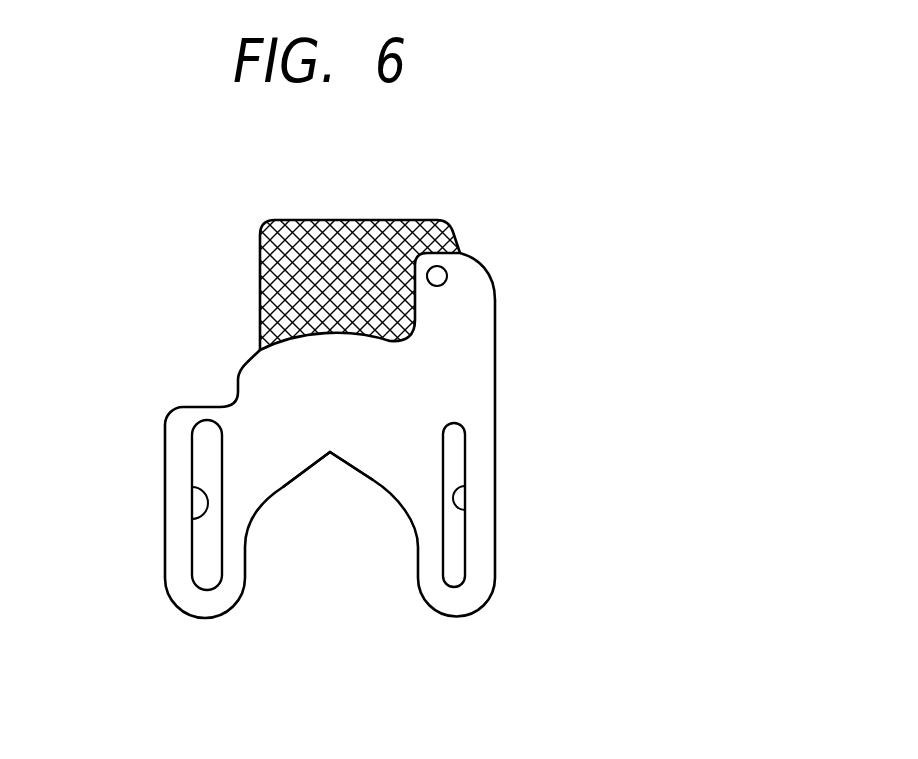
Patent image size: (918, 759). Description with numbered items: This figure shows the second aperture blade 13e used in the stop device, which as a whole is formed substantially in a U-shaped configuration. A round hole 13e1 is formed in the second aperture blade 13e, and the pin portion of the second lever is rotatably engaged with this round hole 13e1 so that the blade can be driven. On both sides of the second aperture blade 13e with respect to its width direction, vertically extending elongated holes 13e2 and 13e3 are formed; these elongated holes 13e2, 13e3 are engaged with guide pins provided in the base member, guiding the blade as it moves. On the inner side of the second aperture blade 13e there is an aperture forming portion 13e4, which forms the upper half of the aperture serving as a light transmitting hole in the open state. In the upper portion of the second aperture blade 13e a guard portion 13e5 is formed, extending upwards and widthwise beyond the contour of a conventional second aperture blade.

The second aperture blade 13e is at (477, 358).
The round hole 13e1 is at (450, 278).
The elongated hole 13e2 is at (463, 510).
The elongated hole 13e3 is at (195, 519).
The aperture forming portion 13e4 is at (290, 487).
The guard portion 13e5 is at (390, 224).